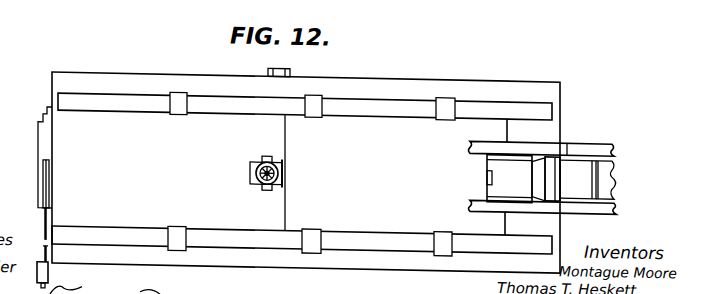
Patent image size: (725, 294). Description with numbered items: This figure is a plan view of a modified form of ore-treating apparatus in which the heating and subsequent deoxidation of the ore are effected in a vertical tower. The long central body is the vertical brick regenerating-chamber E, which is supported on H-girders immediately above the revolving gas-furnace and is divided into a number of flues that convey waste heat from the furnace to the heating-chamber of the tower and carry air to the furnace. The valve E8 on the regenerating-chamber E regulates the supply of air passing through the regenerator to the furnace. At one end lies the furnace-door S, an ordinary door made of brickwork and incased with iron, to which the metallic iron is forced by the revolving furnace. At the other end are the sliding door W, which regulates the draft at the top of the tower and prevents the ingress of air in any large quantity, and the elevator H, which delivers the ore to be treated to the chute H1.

The regenerating-chamber E is at (334, 169).
The valve E8 is at (252, 172).
The furnace-door S is at (40, 190).
The sliding door W is at (516, 179).
The chute H1 is at (548, 180).
The elevator H is at (612, 179).